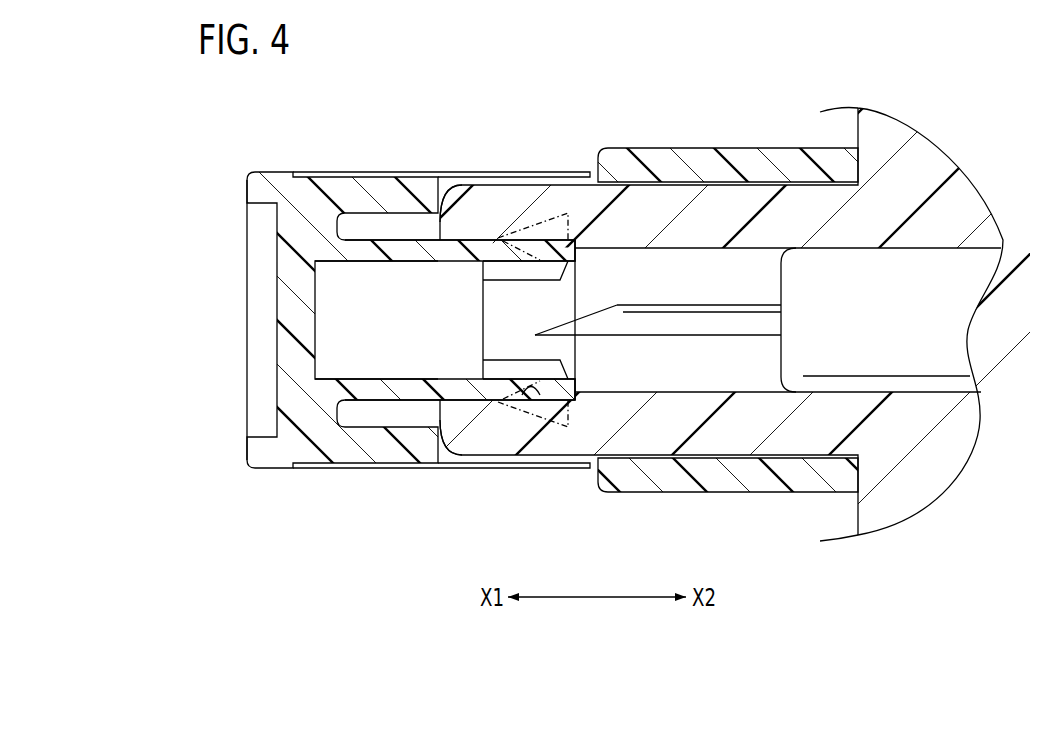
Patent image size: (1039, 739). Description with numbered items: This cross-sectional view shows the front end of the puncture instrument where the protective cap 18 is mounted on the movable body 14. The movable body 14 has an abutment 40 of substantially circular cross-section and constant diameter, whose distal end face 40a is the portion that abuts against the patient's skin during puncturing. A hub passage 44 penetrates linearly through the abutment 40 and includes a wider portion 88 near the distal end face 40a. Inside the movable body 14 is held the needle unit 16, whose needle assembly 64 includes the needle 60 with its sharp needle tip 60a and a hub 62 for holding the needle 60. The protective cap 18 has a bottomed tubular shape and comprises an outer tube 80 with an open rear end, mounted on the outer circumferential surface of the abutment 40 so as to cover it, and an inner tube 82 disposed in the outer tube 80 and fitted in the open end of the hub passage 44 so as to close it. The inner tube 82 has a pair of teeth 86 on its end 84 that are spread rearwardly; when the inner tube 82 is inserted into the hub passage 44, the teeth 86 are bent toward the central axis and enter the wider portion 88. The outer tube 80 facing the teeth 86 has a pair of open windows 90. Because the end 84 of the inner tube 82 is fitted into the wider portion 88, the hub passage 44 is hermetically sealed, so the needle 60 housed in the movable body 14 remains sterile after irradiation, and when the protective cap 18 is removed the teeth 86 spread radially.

The movable body 14 is at (941, 129).
The needle unit 16 is at (948, 328).
The protective cap 18 is at (260, 485).
The abutment 40 is at (681, 245).
The distal end face 40a is at (438, 228).
The hub passage 44 is at (722, 384).
The needle 60 is at (673, 330).
The needle tip 60a is at (563, 333).
The hub 62 is at (960, 358).
The needle assembly 64 is at (942, 243).
The outer tube 80 is at (660, 152).
The inner tube 82 is at (401, 247).
The end 84 is at (459, 250).
The teeth 86 is at (528, 222).
The wider portion 88 is at (517, 398).
The open windows 90 is at (585, 170).